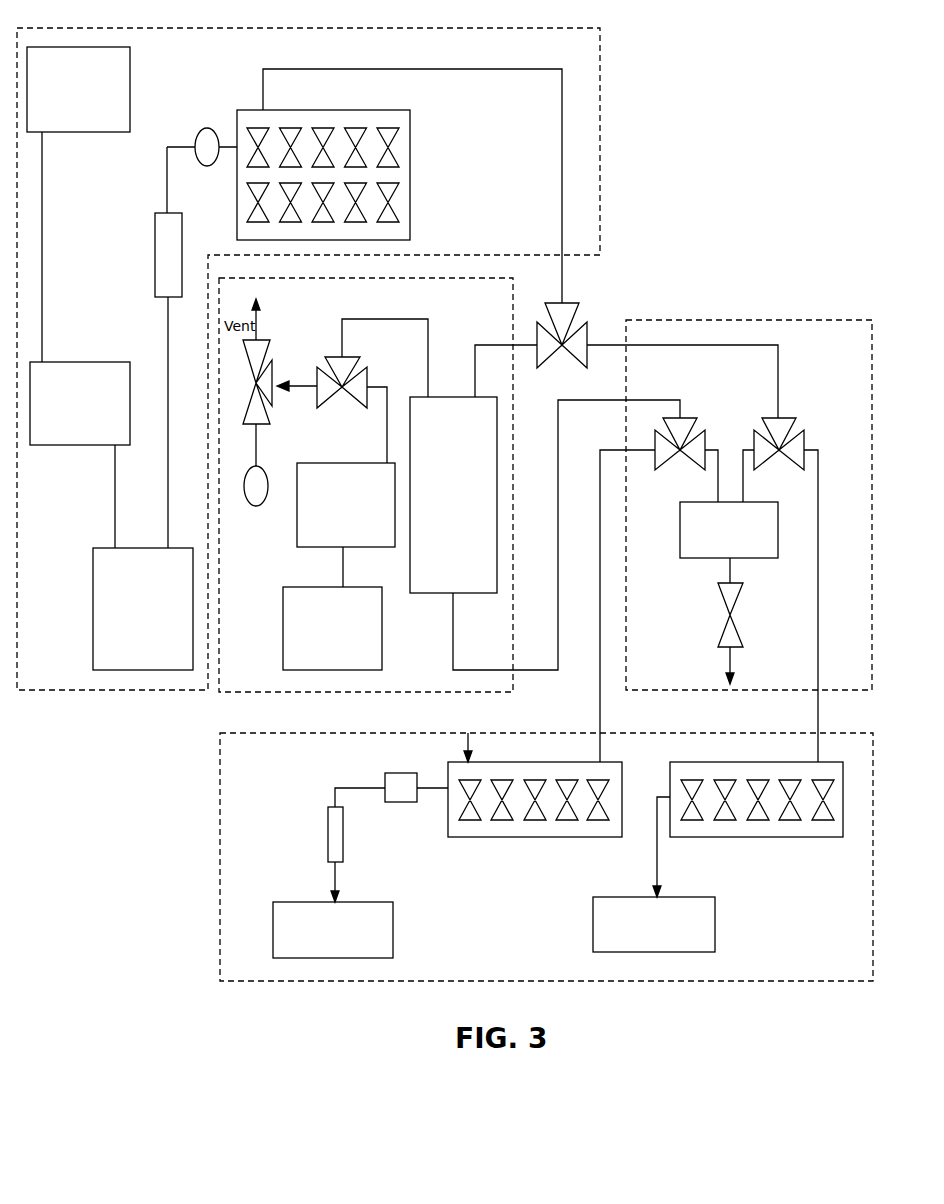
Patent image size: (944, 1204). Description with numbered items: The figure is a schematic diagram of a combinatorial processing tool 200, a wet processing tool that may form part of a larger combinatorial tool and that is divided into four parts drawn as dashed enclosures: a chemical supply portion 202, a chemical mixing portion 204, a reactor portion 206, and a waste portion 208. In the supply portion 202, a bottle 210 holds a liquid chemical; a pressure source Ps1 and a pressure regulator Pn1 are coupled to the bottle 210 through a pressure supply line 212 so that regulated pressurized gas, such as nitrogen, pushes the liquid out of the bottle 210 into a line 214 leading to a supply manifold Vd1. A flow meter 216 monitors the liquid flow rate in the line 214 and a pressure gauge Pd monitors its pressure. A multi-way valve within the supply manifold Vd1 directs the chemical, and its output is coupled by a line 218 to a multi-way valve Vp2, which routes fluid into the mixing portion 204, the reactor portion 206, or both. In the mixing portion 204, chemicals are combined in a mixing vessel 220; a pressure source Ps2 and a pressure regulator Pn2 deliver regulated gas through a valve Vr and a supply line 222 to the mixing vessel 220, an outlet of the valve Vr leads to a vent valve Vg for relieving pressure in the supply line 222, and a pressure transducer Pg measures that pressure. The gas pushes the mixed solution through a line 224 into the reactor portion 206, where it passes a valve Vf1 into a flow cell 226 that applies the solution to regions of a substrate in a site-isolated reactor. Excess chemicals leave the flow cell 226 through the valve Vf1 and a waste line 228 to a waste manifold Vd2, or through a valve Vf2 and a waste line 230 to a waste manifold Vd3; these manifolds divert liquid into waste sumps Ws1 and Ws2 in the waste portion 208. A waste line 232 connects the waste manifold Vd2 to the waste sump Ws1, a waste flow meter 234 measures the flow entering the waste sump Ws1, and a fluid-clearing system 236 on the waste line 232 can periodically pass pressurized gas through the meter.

The combinatorial processing tool 200 is at (866, 113).
The chemical supply portion 202 is at (599, 128).
The chemical mixing portion 204 is at (230, 693).
The reactor portion 206 is at (740, 320).
The waste portion 208 is at (220, 897).
The bottle 210 is at (93, 623).
The pressure supply line 212 is at (42, 208).
The line 214 is at (167, 152).
The flow meter 216 is at (155, 284).
The line 218 is at (377, 69).
The mixing vessel 220 is at (440, 598).
The supply line 222 is at (388, 318).
The line 224 is at (462, 668).
The flow cell 226 is at (680, 535).
The waste line 228 is at (600, 563).
The waste line 230 is at (818, 590).
The waste line 232 is at (342, 788).
The waste flow meter 234 is at (345, 820).
The system for clearing fluids 236 is at (410, 803).
The pressure source Ps1 is at (112, 132).
The pressure gauge Pd is at (216, 164).
The pressure regulator Pn1 is at (78, 447).
The supply manifold Vd1 is at (410, 149).
The valve Vp2 is at (581, 314).
The valve Vg is at (268, 351).
The pressure transducer Pg is at (255, 507).
The valve Vr is at (357, 369).
The pressure regulator Pn2 is at (297, 523).
The pressure source Ps2 is at (283, 642).
The valve Vf1 is at (699, 429).
The valve Vf2 is at (799, 429).
The waste manifold Vd2 is at (520, 837).
The waste manifold Vd3 is at (790, 837).
The waste sump Ws1 is at (394, 930).
The waste sump Ws2 is at (715, 925).